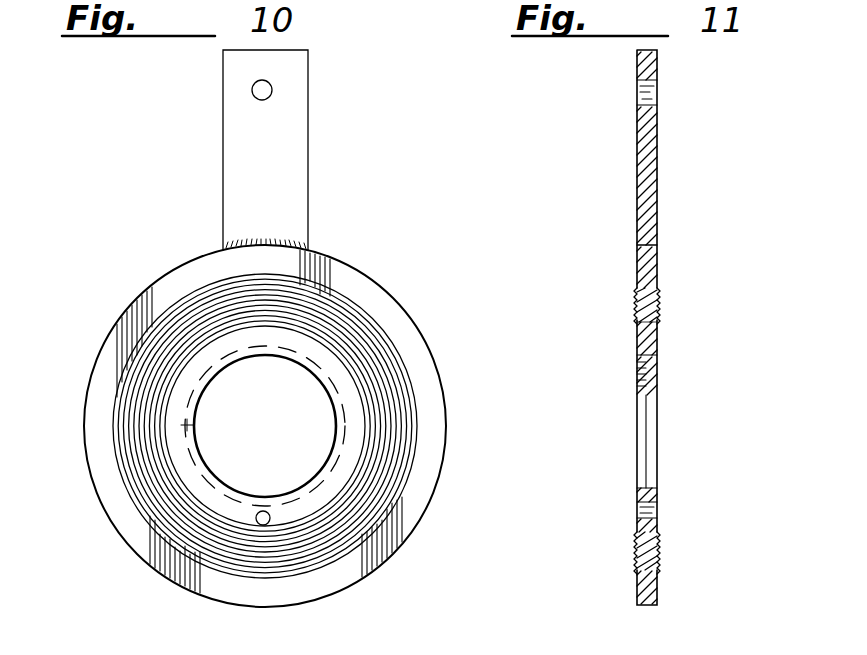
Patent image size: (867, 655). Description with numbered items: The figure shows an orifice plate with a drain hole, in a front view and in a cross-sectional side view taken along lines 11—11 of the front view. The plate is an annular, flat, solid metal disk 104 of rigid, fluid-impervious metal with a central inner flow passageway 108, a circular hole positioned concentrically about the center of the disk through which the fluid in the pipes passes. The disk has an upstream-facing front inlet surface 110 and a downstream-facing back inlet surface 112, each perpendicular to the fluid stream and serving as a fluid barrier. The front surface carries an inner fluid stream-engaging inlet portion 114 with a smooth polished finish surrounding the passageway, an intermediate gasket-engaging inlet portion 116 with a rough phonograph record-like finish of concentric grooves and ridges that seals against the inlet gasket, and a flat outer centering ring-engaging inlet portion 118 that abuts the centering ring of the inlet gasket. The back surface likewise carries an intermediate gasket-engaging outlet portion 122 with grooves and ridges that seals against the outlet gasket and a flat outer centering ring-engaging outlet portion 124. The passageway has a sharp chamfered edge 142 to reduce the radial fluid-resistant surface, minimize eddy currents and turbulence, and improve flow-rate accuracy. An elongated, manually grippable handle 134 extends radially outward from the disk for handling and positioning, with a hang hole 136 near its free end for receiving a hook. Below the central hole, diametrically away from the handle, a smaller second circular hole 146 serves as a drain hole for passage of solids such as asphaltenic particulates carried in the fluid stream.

In FIG. 10, the disk 104 is at (160, 578).
In FIG. 11, the disk 104 is at (650, 608).
In FIG. 10, the inner flow passageway 108 is at (318, 470).
In FIG. 10, the front inlet surface 110 is at (100, 430).
In FIG. 11, the front inlet surface 110 is at (637, 262).
In FIG. 11, the back inlet surface 112 is at (657, 262).
In FIG. 10, the inner fluid stream-engaging inlet portion 114 is at (190, 428).
In FIG. 10, the intermediate gasket-engaging inlet portion 116 is at (152, 345).
In FIG. 11, the intermediate gasket-engaging inlet portion 116 is at (637, 310).
In FIG. 10, the outer centering ring-engaging inlet portion 118 is at (380, 552).
In FIG. 11, the outer centering ring-engaging inlet portion 118 is at (637, 590).
In FIG. 11, the intermediate gasket-engaging outlet portion 122 is at (657, 308).
In FIG. 11, the outer centering ring-engaging outlet portion 124 is at (657, 590).
In FIG. 10, the handle 134 is at (223, 154).
In FIG. 11, the handle 134 is at (637, 172).
In FIG. 10, the hang hole 136 is at (272, 90).
In FIG. 11, the hang hole 136 is at (657, 88).
In FIG. 11, the chamfered edge 142 is at (655, 362).
In FIG. 10, the second circular hole 146 is at (256, 512).
In FIG. 11, the second circular hole 146 is at (637, 510).
In FIG. 10, the section lines 11 is at (236, 46).